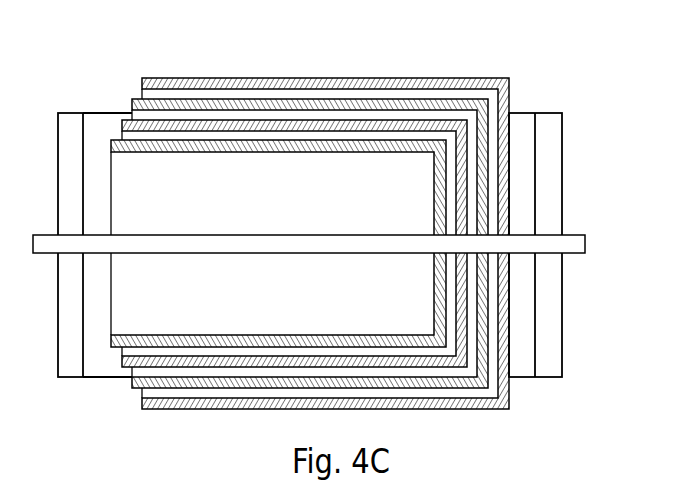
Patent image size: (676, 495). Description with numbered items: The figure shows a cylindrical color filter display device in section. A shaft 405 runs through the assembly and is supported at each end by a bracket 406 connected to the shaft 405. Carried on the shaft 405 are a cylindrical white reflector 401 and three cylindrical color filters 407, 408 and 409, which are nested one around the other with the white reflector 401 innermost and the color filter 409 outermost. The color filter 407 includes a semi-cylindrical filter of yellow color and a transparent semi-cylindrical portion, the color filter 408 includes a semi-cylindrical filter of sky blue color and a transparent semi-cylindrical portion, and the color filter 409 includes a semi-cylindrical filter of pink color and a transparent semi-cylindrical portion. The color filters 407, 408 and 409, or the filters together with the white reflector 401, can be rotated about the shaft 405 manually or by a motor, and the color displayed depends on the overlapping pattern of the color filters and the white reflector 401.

The white reflector 401 is at (119, 139).
The shaft 405 is at (576, 243).
The bracket 406 is at (545, 293).
The color filter 407 is at (173, 120).
The color filter 408 is at (321, 100).
The color filter 409 is at (441, 81).